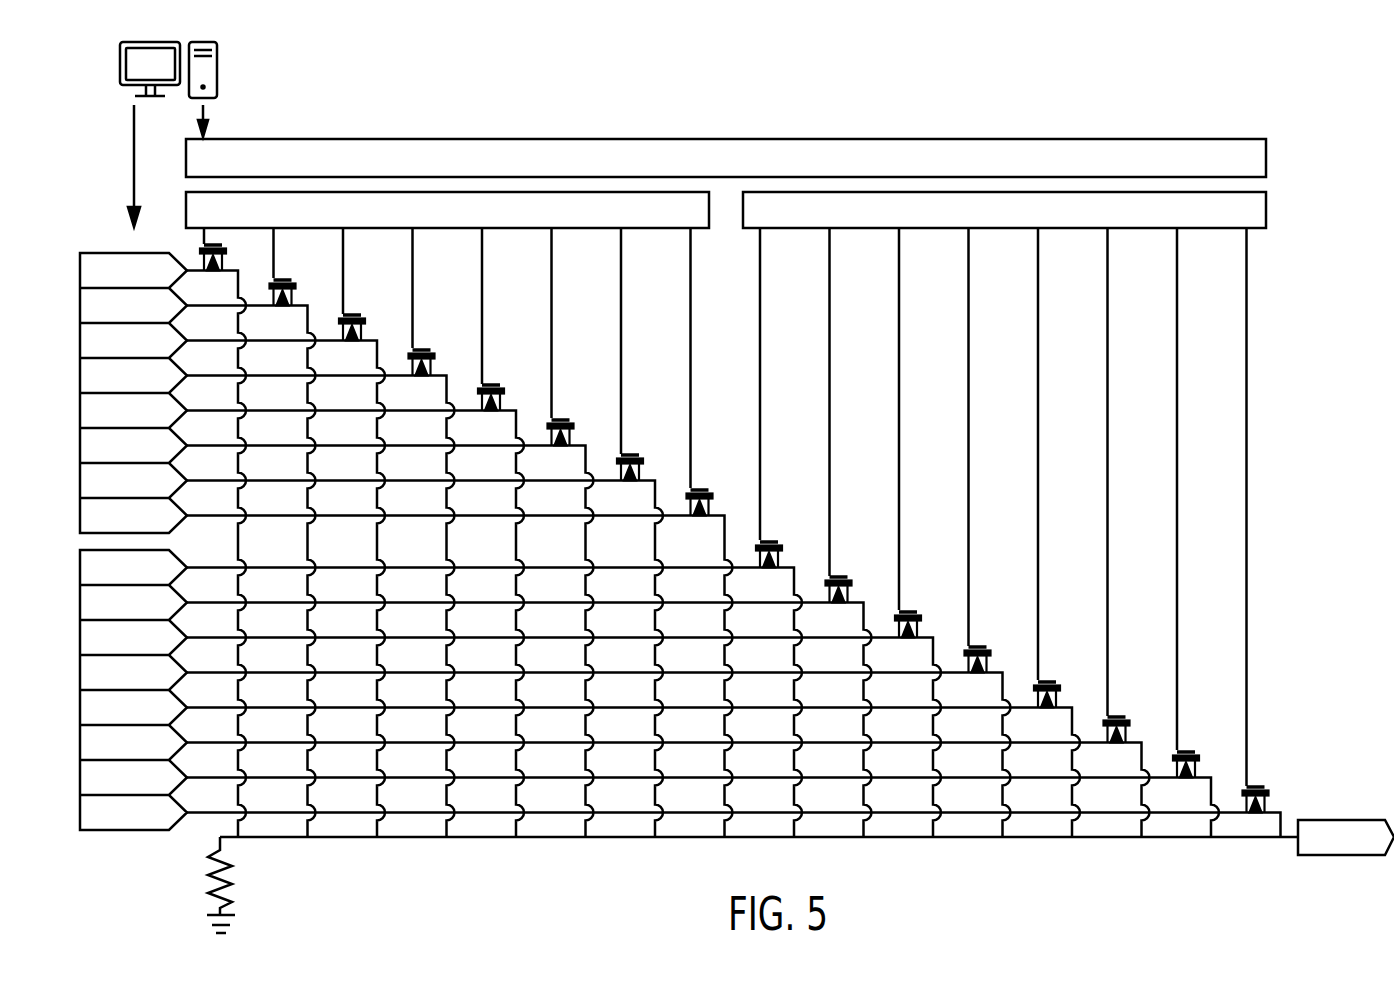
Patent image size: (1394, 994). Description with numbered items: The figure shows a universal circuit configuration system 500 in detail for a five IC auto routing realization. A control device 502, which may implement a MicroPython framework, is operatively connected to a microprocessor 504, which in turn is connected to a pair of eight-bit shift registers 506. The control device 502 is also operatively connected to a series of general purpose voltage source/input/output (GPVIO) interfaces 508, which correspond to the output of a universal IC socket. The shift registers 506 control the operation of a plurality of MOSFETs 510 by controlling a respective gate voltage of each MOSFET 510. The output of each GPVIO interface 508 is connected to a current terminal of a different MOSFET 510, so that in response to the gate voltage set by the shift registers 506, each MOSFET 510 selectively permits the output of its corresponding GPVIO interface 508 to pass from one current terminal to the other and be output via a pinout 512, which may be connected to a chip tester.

The universal circuit configuration system 500 is at (1300, 69).
The control device 502 is at (215, 62).
The microprocessor 504 is at (708, 139).
The shift registers 506 is at (552, 192).
The general purpose voltage source/input/output (GPVIO) interfaces 508 is at (100, 830).
The MOSFETs 510 is at (1270, 792).
The pinout 512 is at (1315, 857).